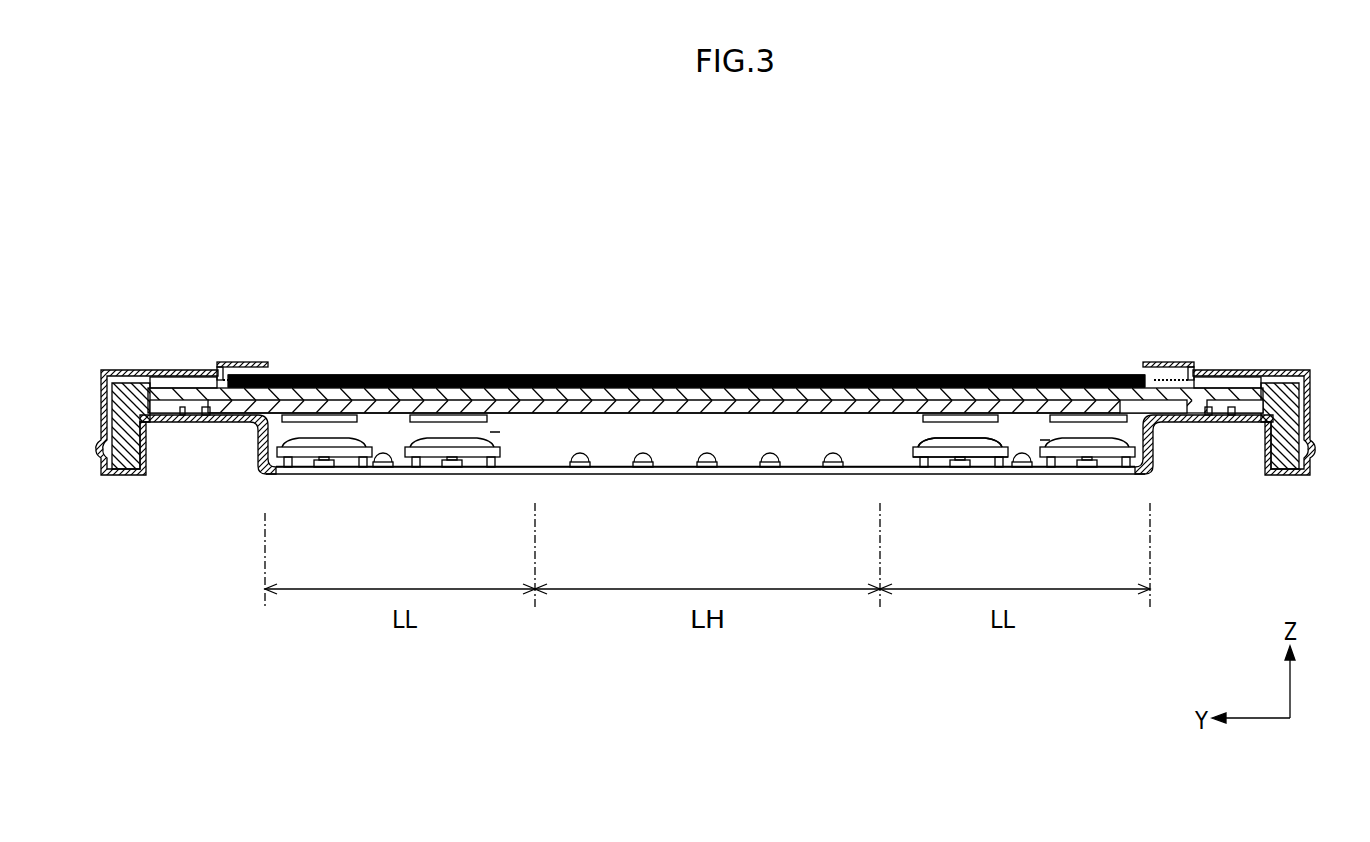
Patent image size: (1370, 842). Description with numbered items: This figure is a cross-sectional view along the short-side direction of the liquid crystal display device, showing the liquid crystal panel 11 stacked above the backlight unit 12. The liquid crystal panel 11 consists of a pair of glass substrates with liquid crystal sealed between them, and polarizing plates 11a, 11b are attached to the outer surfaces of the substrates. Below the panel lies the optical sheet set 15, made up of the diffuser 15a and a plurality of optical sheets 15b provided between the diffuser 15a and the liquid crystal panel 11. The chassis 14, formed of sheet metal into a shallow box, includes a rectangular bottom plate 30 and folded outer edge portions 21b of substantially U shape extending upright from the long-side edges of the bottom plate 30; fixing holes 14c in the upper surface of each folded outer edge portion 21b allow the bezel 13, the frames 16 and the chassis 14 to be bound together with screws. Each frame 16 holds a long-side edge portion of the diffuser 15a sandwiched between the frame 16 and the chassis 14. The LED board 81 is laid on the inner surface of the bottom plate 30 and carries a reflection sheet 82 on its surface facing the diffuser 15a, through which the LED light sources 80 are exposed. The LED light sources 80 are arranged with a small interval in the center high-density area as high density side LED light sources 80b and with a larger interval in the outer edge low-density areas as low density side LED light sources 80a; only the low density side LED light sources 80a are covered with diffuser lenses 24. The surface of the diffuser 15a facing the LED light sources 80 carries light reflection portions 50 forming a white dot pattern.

The liquid crystal panel 11 is at (412, 362).
The polarizing plate 11a is at (465, 373).
The polarizing plate 11b is at (540, 376).
The backlight unit 12 is at (1155, 480).
The bezel 13 is at (1232, 372).
The chassis 14 is at (677, 470).
The fixing hole 14c is at (192, 422).
The optical sheet set 15 is at (847, 336).
The diffuser 15a is at (737, 403).
The optical sheets 15b is at (813, 393).
The frame 16 is at (124, 388).
The folded outer edge portion 21b is at (132, 465).
The diffuser lens 24 is at (490, 431).
The bottom plate 30 is at (378, 462).
The light reflection portion 50 is at (322, 417).
The LED light source 80 is at (997, 539).
The low density side LED light source 80a is at (963, 460).
The high density side LED light source 80b is at (848, 452).
The LED board 81 is at (797, 467).
The reflection sheet 82 is at (1032, 462).